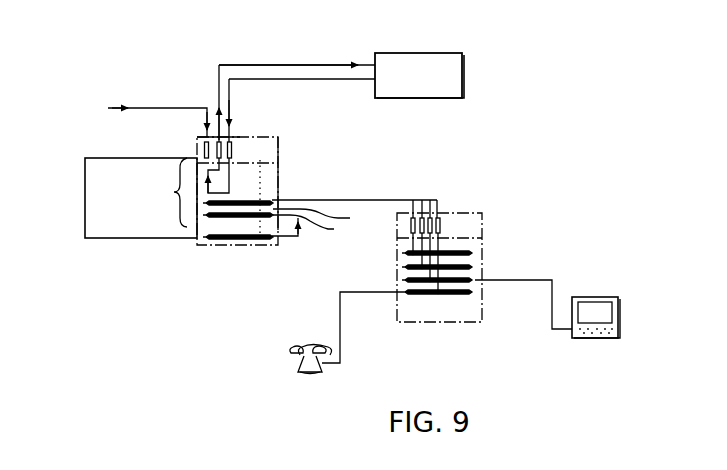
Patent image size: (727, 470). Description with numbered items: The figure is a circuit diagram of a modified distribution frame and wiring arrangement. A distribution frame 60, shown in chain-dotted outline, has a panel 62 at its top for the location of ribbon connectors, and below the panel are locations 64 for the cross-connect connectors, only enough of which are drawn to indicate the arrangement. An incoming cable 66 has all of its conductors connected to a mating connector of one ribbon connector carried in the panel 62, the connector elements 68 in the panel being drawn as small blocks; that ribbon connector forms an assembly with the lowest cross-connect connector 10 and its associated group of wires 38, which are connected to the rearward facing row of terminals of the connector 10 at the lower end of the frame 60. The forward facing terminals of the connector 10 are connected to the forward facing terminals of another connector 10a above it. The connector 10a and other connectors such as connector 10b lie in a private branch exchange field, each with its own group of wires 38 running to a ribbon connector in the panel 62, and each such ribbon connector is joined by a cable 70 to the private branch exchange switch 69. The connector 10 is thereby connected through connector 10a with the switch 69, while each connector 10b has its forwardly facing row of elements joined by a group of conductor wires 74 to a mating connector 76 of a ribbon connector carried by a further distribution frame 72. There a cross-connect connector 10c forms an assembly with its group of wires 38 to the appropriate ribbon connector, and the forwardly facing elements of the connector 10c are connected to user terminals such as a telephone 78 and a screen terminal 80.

The cross-connect connector 10 is at (218, 242).
The cross-connect connector 10a is at (319, 230).
The cross-connect connector 10b is at (330, 215).
The cross-connect connector 10c is at (402, 254).
The group of wires 38 is at (85, 232).
The distribution frame 60 is at (300, 163).
The panel 62 is at (267, 153).
The locations 64 is at (267, 194).
The incoming cable 66 is at (163, 103).
The protection devices 68 is at (203, 148).
The private branch exchange switch 69 is at (464, 72).
The cable 70 is at (302, 80).
The further distribution frame 72 is at (486, 257).
The group of conductor wires 74 is at (385, 199).
The mating connector 76 is at (439, 224).
The telephone 78 is at (289, 368).
The screen terminal 80 is at (581, 295).